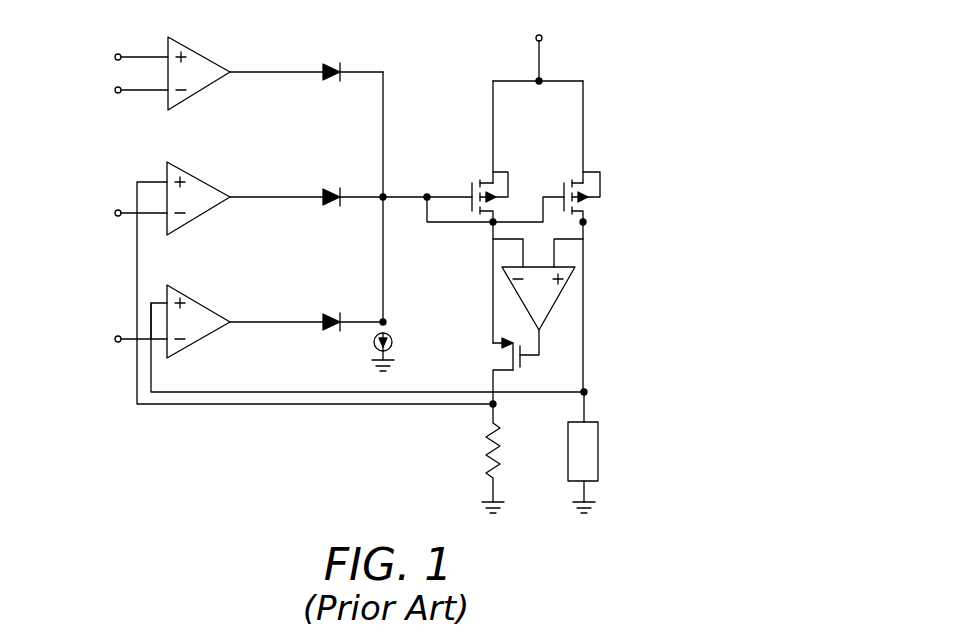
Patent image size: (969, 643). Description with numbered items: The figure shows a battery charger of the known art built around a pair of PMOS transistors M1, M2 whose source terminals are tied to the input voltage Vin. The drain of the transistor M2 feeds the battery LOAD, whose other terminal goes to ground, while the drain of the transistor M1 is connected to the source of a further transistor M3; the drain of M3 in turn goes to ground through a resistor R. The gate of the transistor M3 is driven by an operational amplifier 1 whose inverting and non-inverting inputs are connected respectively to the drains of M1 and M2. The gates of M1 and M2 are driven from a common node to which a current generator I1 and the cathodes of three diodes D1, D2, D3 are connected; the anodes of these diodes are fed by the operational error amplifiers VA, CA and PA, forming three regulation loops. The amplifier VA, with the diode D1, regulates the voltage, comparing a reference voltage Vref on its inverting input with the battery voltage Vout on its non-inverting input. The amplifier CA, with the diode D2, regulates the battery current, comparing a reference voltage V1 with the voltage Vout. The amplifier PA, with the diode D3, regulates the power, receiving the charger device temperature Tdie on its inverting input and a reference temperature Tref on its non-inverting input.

The power error amplifier PA is at (198, 65).
The current error amplifier CA is at (200, 192).
The voltage error amplifier VA is at (200, 316).
The diode D1 is at (349, 307).
The diode D2 is at (371, 182).
The diode D3 is at (349, 56).
The PMOS transistor M1 is at (508, 189).
The PMOS transistor M2 is at (601, 189).
The transistor M3 is at (485, 371).
The operational amplifier 1 is at (545, 300).
The current generator I1 is at (394, 351).
The resistor R is at (505, 458).
The battery LOAD is at (620, 467).
The input voltage Vin is at (534, 54).
The voltage at the battery terminals Vout is at (616, 394).
The reference temperature Tref is at (120, 42).
The temperature of the charger device Tdie is at (120, 109).
The reference voltage V1 is at (120, 196).
The reference voltage Vref is at (119, 323).